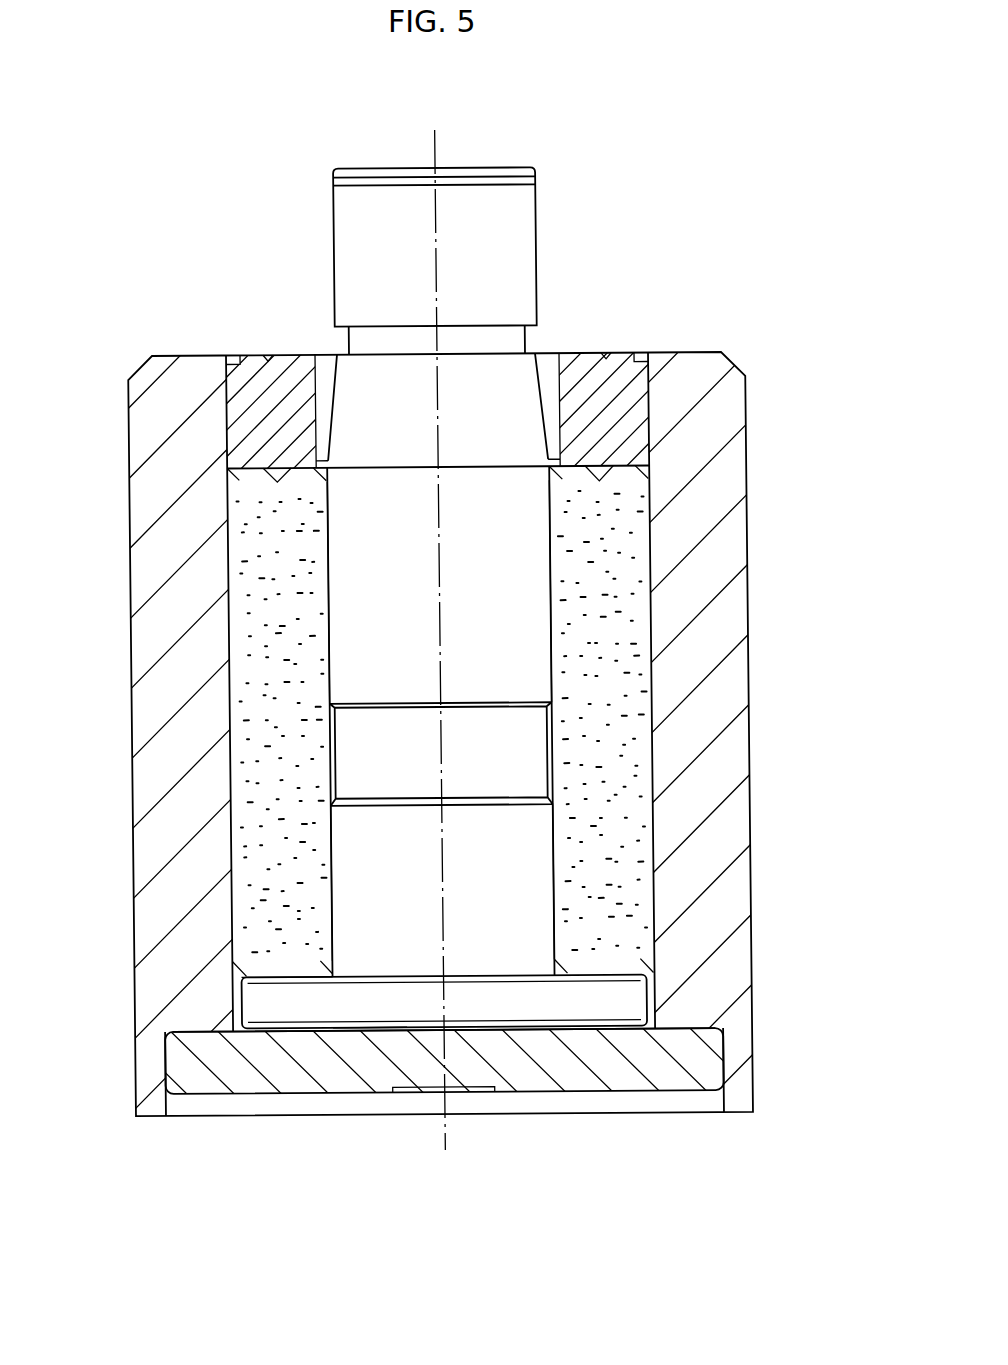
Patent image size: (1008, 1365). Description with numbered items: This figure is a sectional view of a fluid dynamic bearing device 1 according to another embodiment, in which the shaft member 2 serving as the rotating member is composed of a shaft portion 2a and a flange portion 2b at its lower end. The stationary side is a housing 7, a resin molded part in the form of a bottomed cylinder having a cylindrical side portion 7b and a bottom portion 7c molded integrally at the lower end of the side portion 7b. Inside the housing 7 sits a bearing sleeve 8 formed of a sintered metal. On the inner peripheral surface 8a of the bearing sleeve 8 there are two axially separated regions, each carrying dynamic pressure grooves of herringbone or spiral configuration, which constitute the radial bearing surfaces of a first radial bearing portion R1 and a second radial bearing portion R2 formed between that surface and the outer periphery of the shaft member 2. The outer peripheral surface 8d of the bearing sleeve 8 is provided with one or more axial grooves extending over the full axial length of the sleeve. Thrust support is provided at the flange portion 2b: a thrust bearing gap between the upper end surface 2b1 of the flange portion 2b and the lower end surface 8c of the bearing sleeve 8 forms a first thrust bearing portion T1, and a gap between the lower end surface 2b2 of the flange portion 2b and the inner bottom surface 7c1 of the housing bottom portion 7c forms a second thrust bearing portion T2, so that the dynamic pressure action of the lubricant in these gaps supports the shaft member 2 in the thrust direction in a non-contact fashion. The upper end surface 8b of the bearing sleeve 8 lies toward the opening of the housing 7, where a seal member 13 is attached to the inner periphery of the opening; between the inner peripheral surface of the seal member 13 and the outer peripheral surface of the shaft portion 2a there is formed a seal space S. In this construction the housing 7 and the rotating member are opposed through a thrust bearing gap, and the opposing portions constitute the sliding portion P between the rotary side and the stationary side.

The bearing device 1 is at (704, 235).
The shaft member 2 is at (547, 202).
The shaft portion 2a is at (472, 200).
The flange portion 2b is at (620, 1000).
The upper end surface of the flange portion 2b1 is at (592, 973).
The lower end surface of the flange portion 2b2 is at (630, 1034).
The housing 7 is at (752, 381).
The side portion 7b is at (732, 822).
The bottom portion 7c is at (629, 1083).
The inner bottom surface 7c1 is at (301, 1012).
The bearing sleeve 8 is at (644, 570).
The inner peripheral surface of the bearing sleeve 8a is at (544, 571).
The upper end surface of the bearing sleeve 8b is at (301, 459).
The lower end surface of the bearing sleeve 8c is at (292, 976).
The outer peripheral surface of the bearing sleeve 8d is at (646, 894).
The seal member 13 is at (637, 439).
The seal space S is at (325, 372).
The first radial bearing portion R1 is at (327, 617).
The second radial bearing portion R2 is at (326, 887).
The first thrust bearing portion T1 is at (291, 978).
The second thrust bearing portion T2 is at (336, 1025).
The sliding portion P is at (571, 1033).